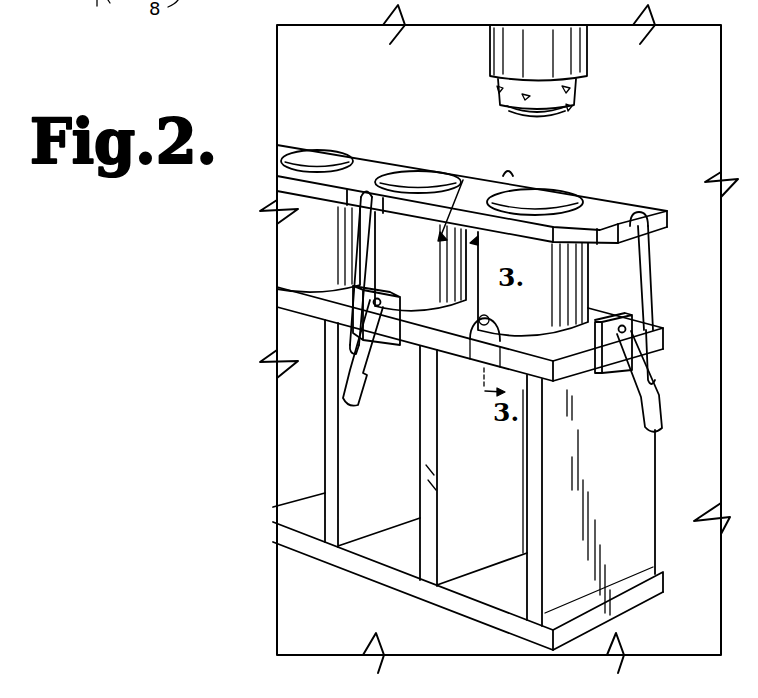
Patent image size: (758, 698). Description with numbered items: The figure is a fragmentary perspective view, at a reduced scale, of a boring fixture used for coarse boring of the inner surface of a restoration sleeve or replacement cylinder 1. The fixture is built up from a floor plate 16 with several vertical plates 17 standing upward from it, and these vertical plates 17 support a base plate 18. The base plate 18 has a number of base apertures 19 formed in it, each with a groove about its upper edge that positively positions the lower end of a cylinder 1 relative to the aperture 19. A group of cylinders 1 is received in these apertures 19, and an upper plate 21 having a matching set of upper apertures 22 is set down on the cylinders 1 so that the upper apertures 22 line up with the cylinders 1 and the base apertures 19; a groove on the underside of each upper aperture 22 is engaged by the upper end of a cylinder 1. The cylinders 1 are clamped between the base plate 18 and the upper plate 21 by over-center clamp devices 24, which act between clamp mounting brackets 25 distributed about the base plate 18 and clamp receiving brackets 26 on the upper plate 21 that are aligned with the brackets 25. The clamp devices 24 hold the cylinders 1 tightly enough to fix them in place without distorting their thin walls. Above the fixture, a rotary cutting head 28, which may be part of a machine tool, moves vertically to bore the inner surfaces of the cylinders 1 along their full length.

The restoration sleeve 1 is at (278, 262).
The floor plate 16 is at (397, 580).
The vertical plates 17 is at (423, 453).
The base plate 18 is at (280, 290).
The base apertures 19 is at (471, 337).
The upper plate 21 is at (365, 164).
The upper apertures 22 is at (312, 157).
The over-center clamp devices 24 is at (370, 257).
The clamp mounting brackets 25 is at (390, 335).
The clamp receiving brackets 26 is at (352, 206).
The rotary cutting head 28 is at (566, 119).